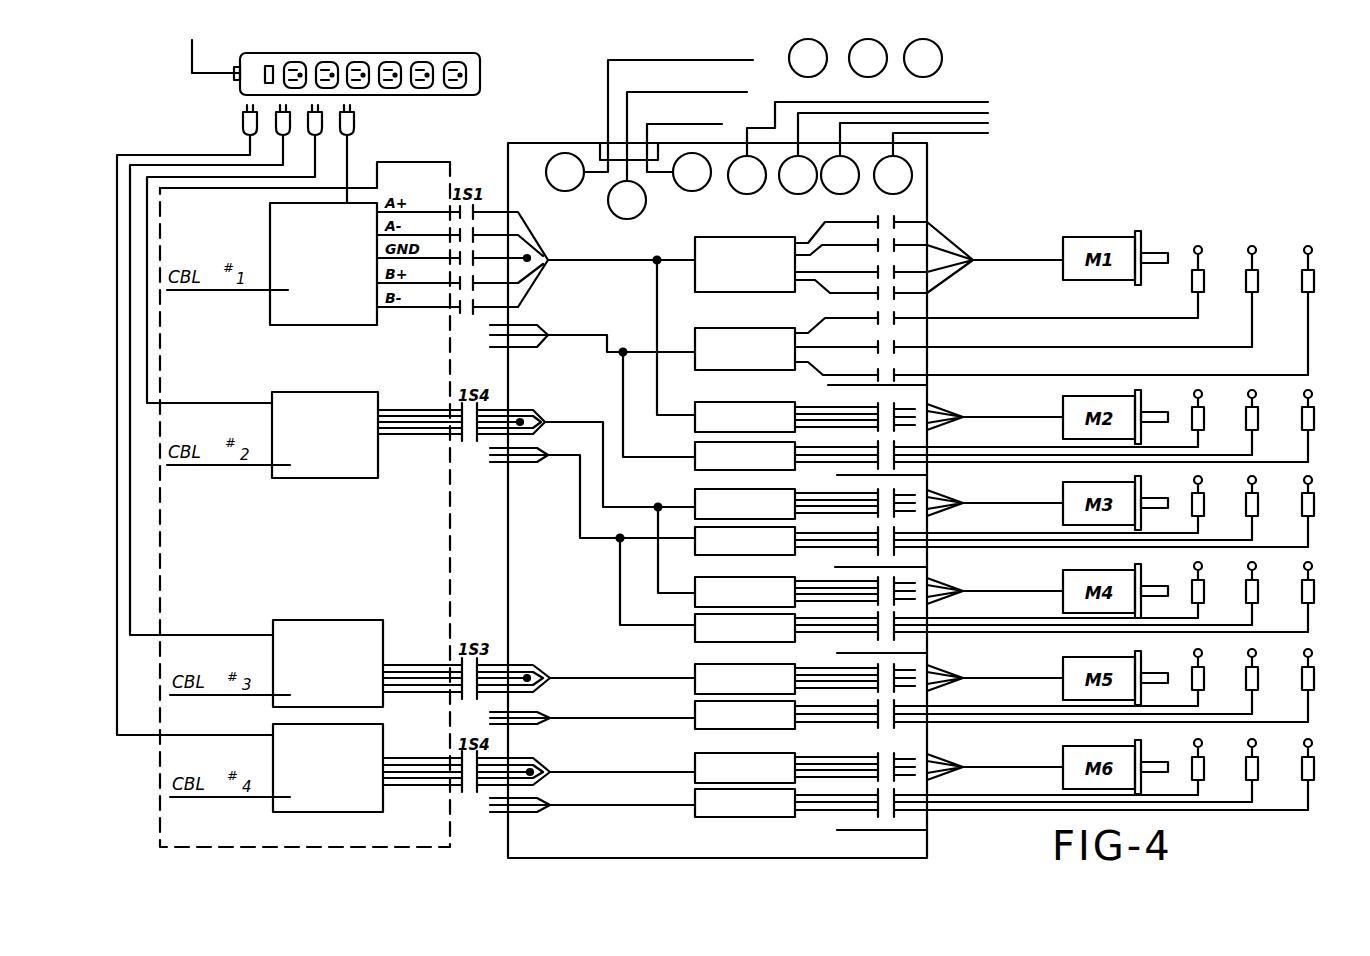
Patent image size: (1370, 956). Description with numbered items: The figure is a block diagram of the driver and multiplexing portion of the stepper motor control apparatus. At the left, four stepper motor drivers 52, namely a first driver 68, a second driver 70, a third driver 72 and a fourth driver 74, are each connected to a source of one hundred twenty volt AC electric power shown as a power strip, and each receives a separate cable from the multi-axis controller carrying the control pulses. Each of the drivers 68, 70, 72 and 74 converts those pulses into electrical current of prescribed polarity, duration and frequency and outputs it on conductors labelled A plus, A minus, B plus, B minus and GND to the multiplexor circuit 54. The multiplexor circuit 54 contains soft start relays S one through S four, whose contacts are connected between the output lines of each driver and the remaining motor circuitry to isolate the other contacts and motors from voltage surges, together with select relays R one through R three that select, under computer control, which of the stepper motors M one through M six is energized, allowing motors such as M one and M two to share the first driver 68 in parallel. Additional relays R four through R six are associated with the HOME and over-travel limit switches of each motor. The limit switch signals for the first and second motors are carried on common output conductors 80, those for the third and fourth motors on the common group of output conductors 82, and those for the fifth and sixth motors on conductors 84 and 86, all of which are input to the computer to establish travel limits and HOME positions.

The drivers 52 is at (357, 196).
The multiplexor circuit 54 is at (580, 107).
The first driver 68 is at (280, 228).
The second driver 70 is at (280, 398).
The third driver 72 is at (282, 622).
The fourth driver 74 is at (280, 729).
The common output conductors 80 is at (484, 338).
The common group of output conductors 82 is at (484, 461).
The conductors 84 is at (474, 713).
The conductors 86 is at (484, 806).